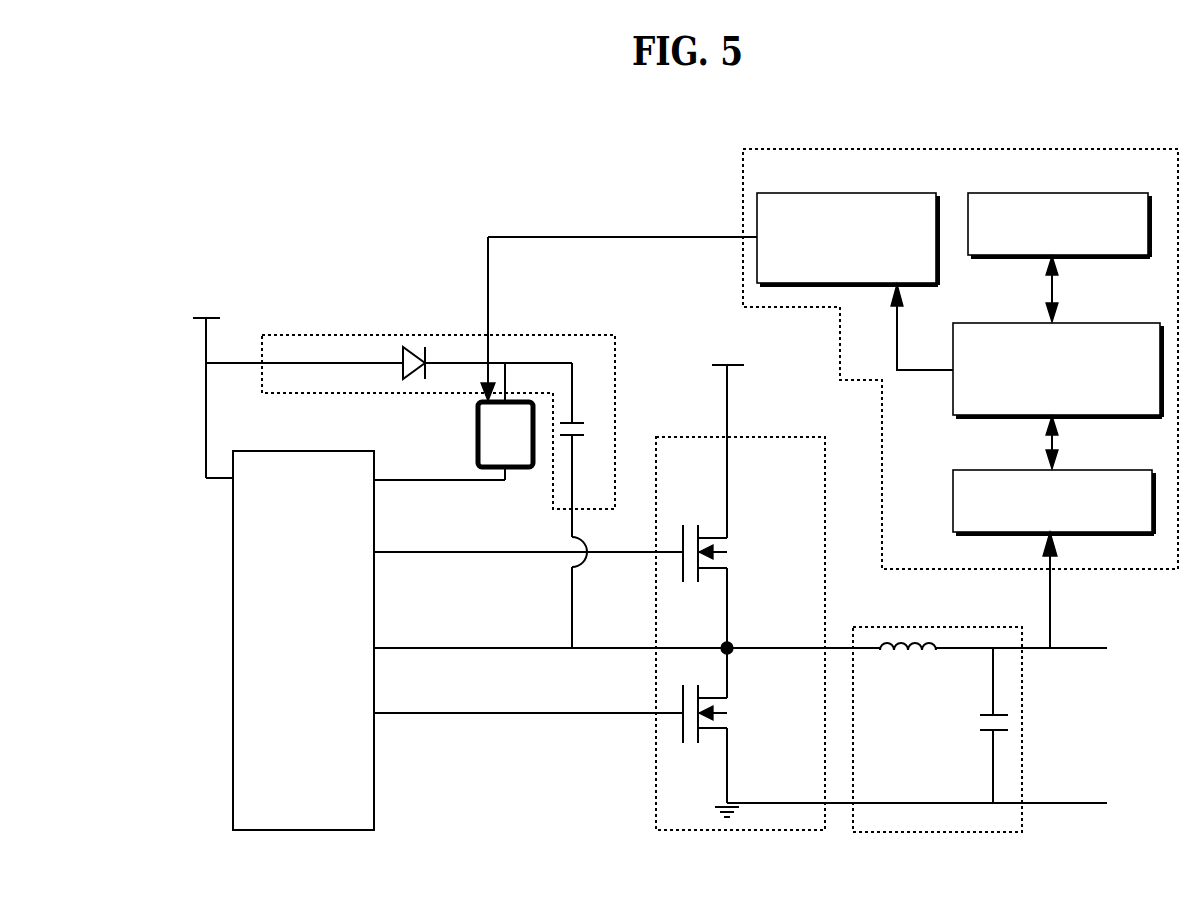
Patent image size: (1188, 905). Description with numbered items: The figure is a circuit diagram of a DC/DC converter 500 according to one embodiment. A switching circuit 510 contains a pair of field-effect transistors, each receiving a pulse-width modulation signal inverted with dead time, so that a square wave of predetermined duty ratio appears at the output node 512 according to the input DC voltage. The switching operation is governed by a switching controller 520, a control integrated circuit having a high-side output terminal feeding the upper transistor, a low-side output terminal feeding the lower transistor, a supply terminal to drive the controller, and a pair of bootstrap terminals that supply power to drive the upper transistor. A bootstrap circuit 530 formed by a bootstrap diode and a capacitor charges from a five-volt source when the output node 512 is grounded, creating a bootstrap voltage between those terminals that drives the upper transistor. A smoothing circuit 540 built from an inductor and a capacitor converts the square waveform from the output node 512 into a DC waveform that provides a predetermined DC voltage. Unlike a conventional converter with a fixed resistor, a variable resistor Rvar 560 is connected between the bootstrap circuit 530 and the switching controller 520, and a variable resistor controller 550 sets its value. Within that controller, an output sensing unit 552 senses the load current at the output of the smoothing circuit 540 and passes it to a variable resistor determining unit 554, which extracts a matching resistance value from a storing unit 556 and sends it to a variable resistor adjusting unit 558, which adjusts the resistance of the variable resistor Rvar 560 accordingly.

The DC/DC converter 500 is at (321, 160).
The switching circuit 510 is at (881, 581).
The output node 512 is at (730, 641).
The switching controller 520 is at (374, 816).
The bootstrap circuit 530 is at (572, 336).
The smoothing circuit 540 is at (938, 628).
The variable resistor controller 550 is at (906, 151).
The output sensing unit 552 is at (1066, 471).
The variable resistor determining unit 554 is at (1069, 323).
The storing unit 556 is at (1069, 192).
The variable resistor adjusting unit 558 is at (874, 192).
The variable resistor Rvar 560 is at (566, 352).